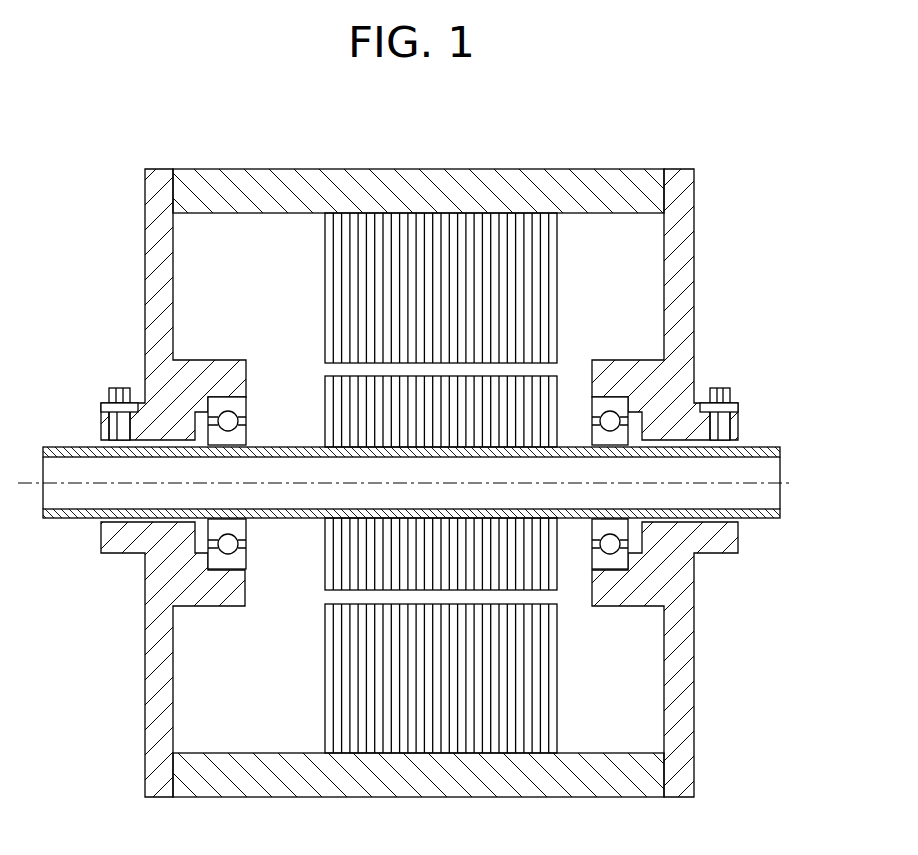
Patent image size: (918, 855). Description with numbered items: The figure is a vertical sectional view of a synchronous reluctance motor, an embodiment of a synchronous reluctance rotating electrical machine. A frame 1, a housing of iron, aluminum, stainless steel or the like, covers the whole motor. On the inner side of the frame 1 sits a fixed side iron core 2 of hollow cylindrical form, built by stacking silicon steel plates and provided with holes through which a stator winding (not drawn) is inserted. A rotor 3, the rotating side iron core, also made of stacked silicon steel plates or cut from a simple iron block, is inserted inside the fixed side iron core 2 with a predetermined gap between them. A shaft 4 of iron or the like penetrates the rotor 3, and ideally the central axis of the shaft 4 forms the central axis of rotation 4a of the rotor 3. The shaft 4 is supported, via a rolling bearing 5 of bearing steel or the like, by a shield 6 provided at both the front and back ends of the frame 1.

The frame 1 is at (581, 169).
The fixed side iron core 2 is at (558, 258).
The rotor 3 is at (558, 383).
The shaft 4 is at (404, 455).
The central axis of rotation 4a is at (82, 482).
The rolling bearing 5 is at (247, 406).
The shield 6 is at (145, 270).